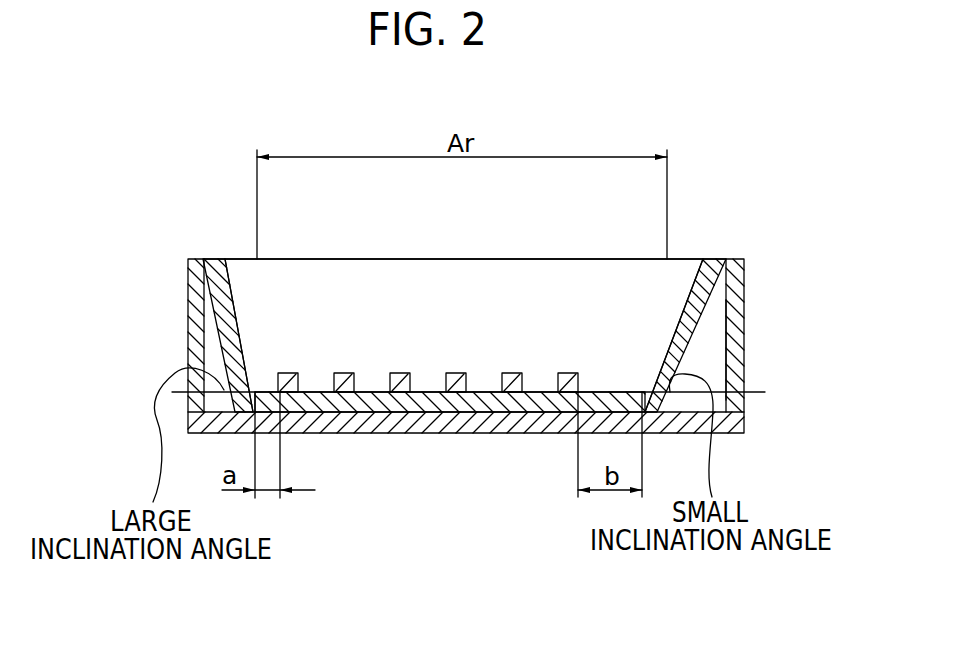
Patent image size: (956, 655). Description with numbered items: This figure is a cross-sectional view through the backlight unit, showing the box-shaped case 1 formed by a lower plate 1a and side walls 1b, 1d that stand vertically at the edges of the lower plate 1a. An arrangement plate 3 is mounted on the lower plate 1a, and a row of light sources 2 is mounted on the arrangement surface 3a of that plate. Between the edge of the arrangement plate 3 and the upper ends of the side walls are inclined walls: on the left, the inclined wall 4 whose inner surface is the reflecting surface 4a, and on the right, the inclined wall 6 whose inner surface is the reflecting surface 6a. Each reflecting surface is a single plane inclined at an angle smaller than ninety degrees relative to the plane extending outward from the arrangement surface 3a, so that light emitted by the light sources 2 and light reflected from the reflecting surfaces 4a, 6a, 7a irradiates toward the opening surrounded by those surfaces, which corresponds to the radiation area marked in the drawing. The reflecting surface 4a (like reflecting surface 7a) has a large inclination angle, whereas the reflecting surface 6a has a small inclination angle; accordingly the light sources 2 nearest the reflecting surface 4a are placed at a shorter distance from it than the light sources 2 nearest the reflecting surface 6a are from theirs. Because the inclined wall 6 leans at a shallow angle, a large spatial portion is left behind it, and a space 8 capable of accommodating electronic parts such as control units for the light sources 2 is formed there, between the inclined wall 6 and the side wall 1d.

The case 1 is at (188, 332).
The lower plate 1a is at (427, 422).
The side wall 1b is at (193, 297).
The side wall 1d is at (733, 303).
The light sources 2 is at (288, 373).
The arrangement plate 3 is at (352, 400).
The arrangement surface 3a is at (489, 386).
The inclined wall 4 is at (238, 305).
The reflecting surface 4a is at (243, 348).
The inclined wall 6 is at (692, 308).
The reflecting surface 6a is at (668, 352).
The reflecting surface 7a is at (416, 275).
The space 8 is at (710, 348).